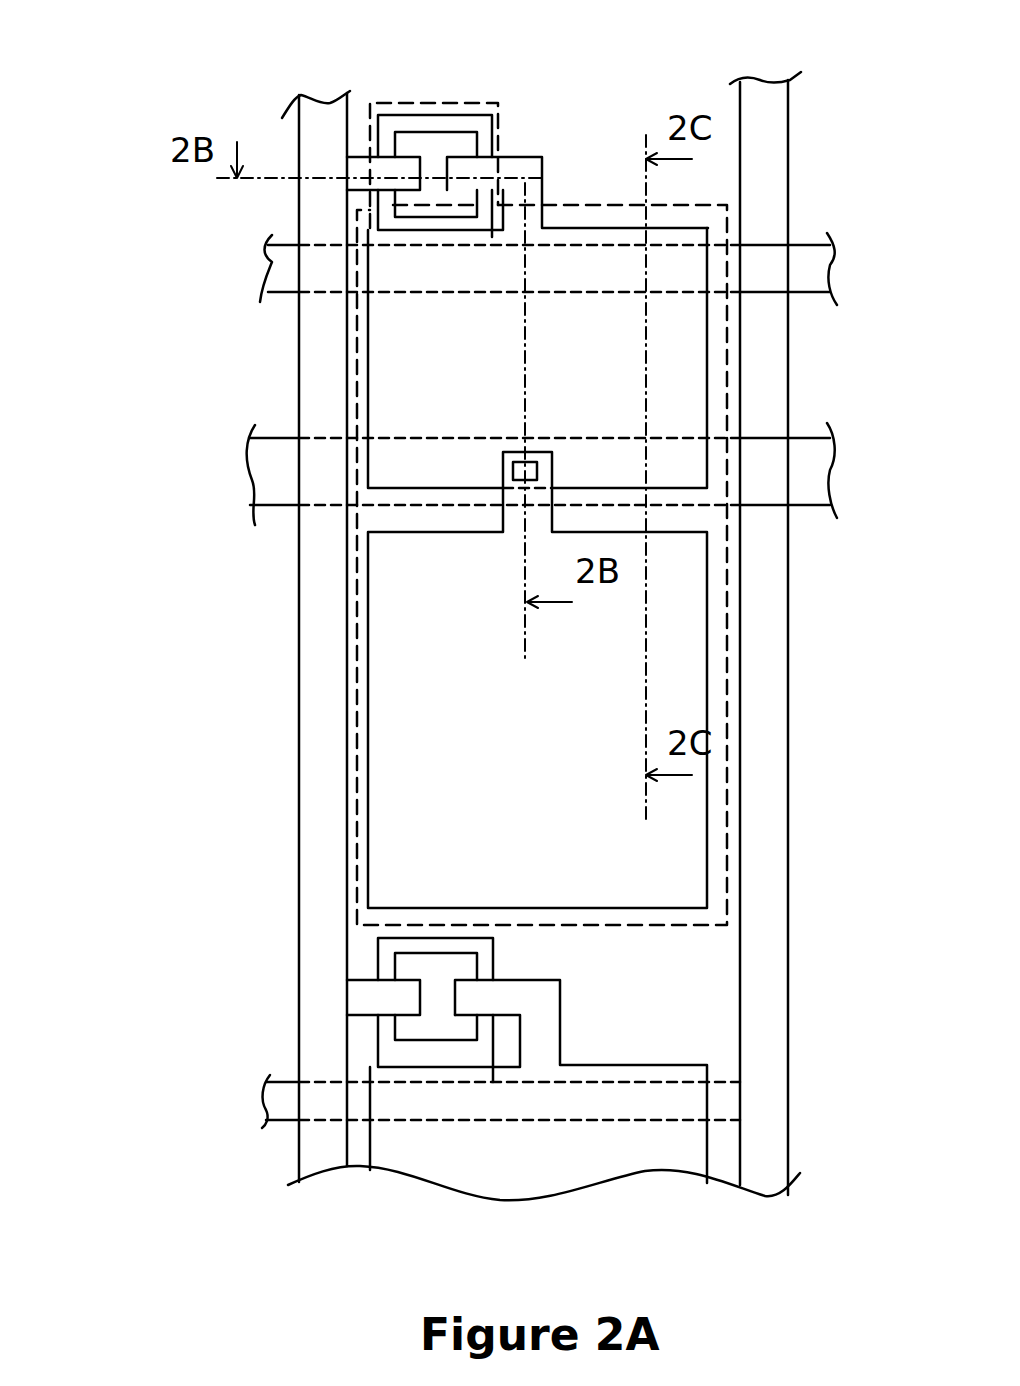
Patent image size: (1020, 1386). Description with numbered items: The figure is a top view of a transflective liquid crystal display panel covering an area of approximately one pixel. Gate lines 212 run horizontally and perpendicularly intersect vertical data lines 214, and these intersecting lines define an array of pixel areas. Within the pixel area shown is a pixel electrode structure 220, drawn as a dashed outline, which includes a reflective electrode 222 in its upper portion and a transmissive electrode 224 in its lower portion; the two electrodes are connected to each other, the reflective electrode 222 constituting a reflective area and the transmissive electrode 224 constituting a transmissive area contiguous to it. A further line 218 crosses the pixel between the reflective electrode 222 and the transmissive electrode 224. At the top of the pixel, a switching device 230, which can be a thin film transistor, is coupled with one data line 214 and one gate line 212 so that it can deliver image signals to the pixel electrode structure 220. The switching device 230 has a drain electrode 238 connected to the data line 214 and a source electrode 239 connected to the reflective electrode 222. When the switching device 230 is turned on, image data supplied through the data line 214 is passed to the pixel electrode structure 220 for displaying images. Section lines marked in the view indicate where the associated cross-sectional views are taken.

The data line 214 is at (300, 105).
The gate line 212 is at (270, 265).
The storage capacitor line 218 is at (276, 485).
The pixel electrode structure 220 is at (357, 822).
The reflective electrode 222 is at (367, 352).
The transmissive electrode 224 is at (367, 700).
The switching device 230 is at (440, 100).
The drain electrode 238 is at (390, 168).
The source electrode 239 is at (477, 175).